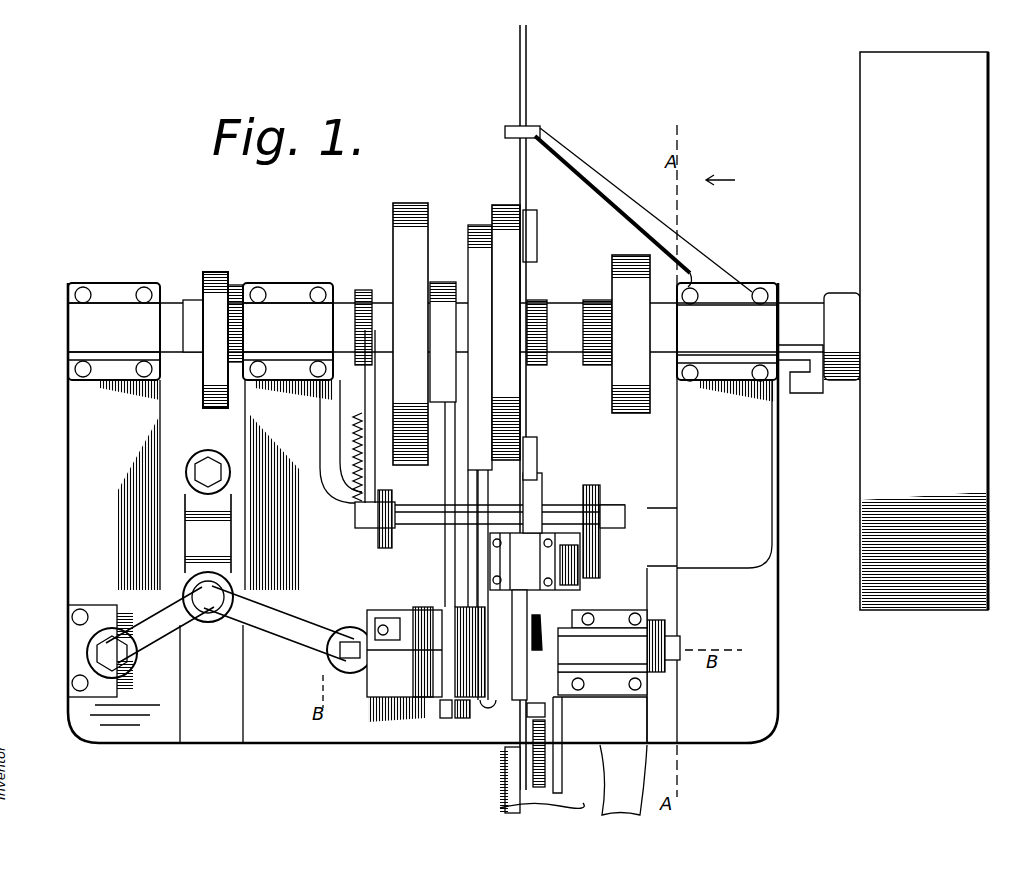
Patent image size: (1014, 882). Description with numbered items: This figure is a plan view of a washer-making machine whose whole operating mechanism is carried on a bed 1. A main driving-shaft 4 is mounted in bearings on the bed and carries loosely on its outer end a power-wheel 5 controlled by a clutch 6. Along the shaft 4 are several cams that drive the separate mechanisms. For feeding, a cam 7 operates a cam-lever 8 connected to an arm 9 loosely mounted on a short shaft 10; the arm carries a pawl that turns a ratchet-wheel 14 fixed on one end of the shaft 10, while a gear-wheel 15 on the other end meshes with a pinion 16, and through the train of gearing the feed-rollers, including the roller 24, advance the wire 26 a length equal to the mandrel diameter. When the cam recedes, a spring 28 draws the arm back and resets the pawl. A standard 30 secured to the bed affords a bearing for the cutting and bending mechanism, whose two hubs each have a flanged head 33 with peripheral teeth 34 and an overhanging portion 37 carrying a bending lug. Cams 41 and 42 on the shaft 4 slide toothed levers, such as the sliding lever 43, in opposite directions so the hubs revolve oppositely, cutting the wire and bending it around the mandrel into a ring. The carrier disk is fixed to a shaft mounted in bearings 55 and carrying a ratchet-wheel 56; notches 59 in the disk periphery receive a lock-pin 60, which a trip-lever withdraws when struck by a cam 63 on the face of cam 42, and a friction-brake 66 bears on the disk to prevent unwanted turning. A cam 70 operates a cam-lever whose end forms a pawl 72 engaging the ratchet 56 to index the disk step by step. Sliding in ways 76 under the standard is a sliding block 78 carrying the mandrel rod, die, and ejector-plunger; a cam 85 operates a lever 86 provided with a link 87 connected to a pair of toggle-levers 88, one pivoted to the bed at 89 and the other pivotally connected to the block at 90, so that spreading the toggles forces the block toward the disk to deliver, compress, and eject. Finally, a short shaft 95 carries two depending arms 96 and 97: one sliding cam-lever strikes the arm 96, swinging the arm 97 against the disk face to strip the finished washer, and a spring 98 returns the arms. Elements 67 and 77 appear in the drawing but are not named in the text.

The bed 1 is at (122, 500).
The main driving-shaft 4 is at (558, 303).
The power-wheel 5 is at (906, 331).
The clutch 6 is at (805, 391).
The cam 7 is at (362, 290).
The cam-lever 8 is at (365, 382).
The arm 9 is at (370, 500).
The short shaft 10 is at (436, 526).
The ratchet-wheel 14 is at (380, 545).
The gear-wheel 15 is at (605, 516).
The pinion 16 is at (598, 560).
The roller 24 is at (528, 548).
The wire 26 is at (527, 128).
The spring 28 is at (341, 457).
The standard 30 is at (465, 652).
The flanged head 33 is at (432, 622).
The peripheral teeth 34 is at (480, 605).
The overhanging portion 37 is at (578, 624).
The cam 41 is at (410, 204).
The cam 42 is at (494, 392).
The sliding lever 43 is at (445, 282).
The bearings 55 is at (602, 650).
The ratchet-wheel 56 is at (682, 642).
The notches 59 is at (545, 652).
The lock-pin 60 is at (542, 480).
The cam 63 is at (538, 222).
The friction-brake 66 is at (528, 622).
The arm 67 is at (537, 452).
The cam 70 is at (612, 258).
The pawl 72 is at (392, 504).
The ways 76 is at (340, 720).
The frame wall 77 is at (675, 452).
The sliding block 78 is at (382, 700).
The cam 85 is at (222, 268).
The lever 86 is at (208, 457).
The link 87 is at (220, 536).
The toggle-levers 88 is at (262, 612).
The pivot 89 is at (112, 628).
The pivotal connection 90 is at (322, 667).
The short shaft 95 is at (458, 716).
The arm 96 is at (488, 714).
The arm 97 is at (546, 710).
The spring 98 is at (515, 728).